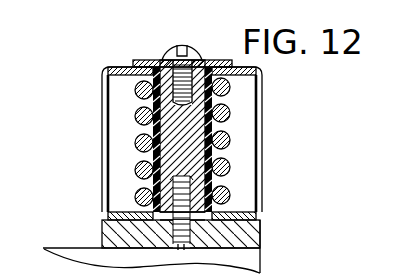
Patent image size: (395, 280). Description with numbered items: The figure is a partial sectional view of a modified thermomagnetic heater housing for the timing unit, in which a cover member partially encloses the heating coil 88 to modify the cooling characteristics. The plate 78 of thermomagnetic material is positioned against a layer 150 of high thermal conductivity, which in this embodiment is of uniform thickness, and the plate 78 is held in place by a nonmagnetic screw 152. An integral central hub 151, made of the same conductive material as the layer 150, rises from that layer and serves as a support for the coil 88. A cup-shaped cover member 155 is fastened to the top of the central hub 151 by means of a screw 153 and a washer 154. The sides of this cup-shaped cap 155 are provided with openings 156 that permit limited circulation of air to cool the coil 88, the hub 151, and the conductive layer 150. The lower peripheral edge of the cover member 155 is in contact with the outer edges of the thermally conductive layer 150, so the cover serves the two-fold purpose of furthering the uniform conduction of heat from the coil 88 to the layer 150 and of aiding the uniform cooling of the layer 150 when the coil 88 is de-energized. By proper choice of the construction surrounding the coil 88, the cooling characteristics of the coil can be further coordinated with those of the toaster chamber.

The plate of thermomagnetic material 78 is at (248, 235).
The heating coil 88 is at (192, 120).
The layer of high thermal conductivity 150 is at (250, 216).
The central hub 151 is at (226, 122).
The nonmagnetic screw 152 is at (258, 263).
The screw 153 is at (176, 46).
The washer 154 is at (150, 63).
The cup-shaped cover member 155 is at (104, 68).
The openings 156 is at (104, 115).